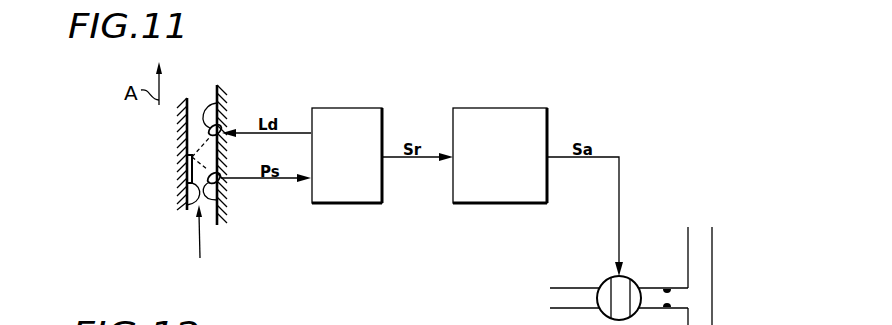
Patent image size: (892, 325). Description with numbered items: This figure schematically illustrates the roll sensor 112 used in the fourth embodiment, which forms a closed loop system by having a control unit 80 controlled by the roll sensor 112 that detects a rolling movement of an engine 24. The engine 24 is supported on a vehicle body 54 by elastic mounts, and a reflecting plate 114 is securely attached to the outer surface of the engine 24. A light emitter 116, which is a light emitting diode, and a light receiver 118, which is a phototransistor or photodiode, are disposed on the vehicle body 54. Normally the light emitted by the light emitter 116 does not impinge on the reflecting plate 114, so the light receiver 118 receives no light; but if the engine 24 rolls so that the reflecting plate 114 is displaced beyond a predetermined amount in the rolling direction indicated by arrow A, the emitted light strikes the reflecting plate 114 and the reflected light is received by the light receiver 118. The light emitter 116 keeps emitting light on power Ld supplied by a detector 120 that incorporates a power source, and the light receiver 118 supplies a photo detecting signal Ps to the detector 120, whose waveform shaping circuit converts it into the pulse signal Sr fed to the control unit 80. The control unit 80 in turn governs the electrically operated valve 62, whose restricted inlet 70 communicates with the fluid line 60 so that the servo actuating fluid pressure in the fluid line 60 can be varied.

The vehicle body 54 is at (218, 96).
The light emitter 116 is at (220, 102).
The light receiver 118 is at (222, 208).
The engine 24 is at (182, 150).
The reflecting plate 114 is at (186, 206).
The roll sensor 112 is at (203, 242).
The detector 120 is at (366, 204).
The control unit 80 is at (522, 108).
The electrically operated valve 62 is at (621, 279).
The restricted inlet 70 is at (669, 292).
The fluid line 60 is at (708, 297).